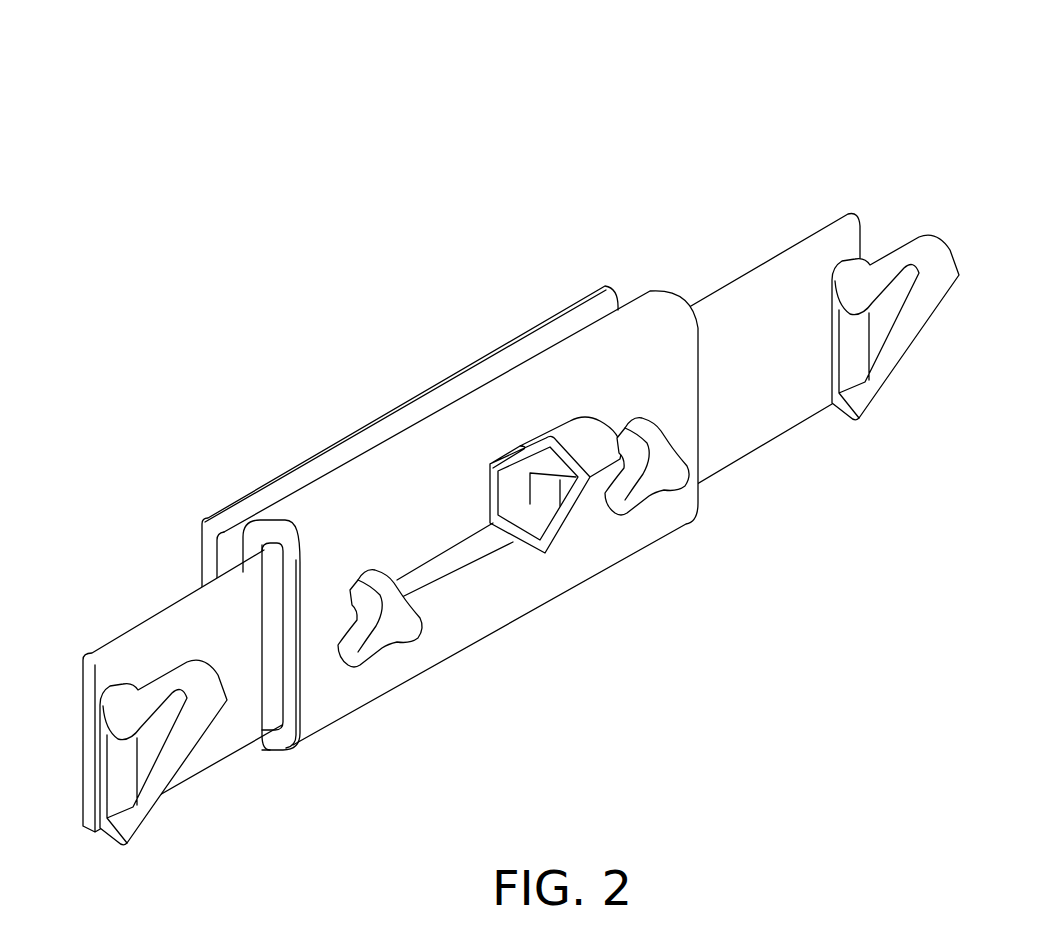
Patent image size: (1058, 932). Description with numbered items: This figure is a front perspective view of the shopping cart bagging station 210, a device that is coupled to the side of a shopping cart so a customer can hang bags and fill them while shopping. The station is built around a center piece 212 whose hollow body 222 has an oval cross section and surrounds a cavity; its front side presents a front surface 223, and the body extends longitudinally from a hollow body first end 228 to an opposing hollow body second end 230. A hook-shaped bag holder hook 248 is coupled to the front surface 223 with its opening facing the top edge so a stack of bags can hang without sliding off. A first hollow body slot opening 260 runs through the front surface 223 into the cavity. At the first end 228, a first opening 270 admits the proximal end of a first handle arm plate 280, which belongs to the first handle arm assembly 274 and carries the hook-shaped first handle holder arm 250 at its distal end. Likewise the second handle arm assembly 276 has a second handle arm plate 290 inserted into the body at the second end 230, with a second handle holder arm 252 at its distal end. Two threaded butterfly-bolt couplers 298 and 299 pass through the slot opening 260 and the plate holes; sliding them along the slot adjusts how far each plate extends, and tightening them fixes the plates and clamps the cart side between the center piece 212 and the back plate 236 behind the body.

The shopping cart bagging station 210 is at (397, 242).
The center piece 212 is at (591, 630).
The hollow body 222 is at (620, 348).
The front surface 223 is at (445, 516).
The hollow body first end 228 is at (301, 768).
The hollow body second end 230 is at (742, 526).
The back plate 236 is at (333, 462).
The bag holder hook 248 is at (582, 440).
The first handle holder arm 250 is at (155, 810).
The second handle holder arm 252 is at (937, 253).
The first hollow body slot opening 260 is at (427, 568).
The first opening 270 is at (268, 545).
The first handle arm assembly 274 is at (100, 585).
The second handle arm assembly 276 is at (770, 106).
The first handle arm plate 280 is at (168, 625).
The second handle arm plate 290 is at (765, 290).
The coupler 298 is at (392, 627).
The coupler 299 is at (653, 477).